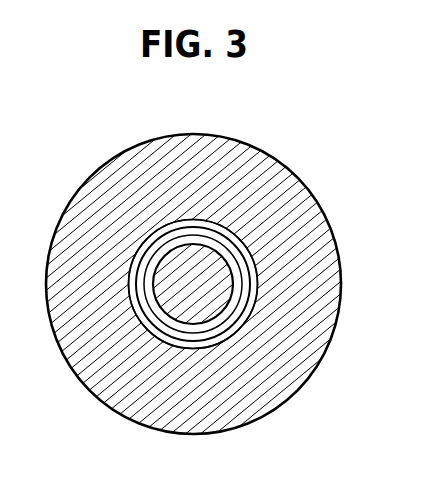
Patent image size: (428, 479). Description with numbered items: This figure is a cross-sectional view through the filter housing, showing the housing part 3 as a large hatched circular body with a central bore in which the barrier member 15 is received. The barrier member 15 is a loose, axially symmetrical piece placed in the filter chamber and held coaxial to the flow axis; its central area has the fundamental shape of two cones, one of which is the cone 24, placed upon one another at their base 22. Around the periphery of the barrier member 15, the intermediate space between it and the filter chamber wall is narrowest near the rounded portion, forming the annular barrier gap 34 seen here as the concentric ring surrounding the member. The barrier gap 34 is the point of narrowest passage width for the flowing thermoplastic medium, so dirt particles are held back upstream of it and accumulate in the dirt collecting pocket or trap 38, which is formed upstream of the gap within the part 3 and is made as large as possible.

The part 3 is at (123, 177).
The barrier member 15 is at (204, 258).
The base 22 is at (245, 250).
The cone 24 is at (167, 315).
The annular barrier gap 34 is at (223, 333).
The dirt collecting pocket or trap 38 is at (133, 256).